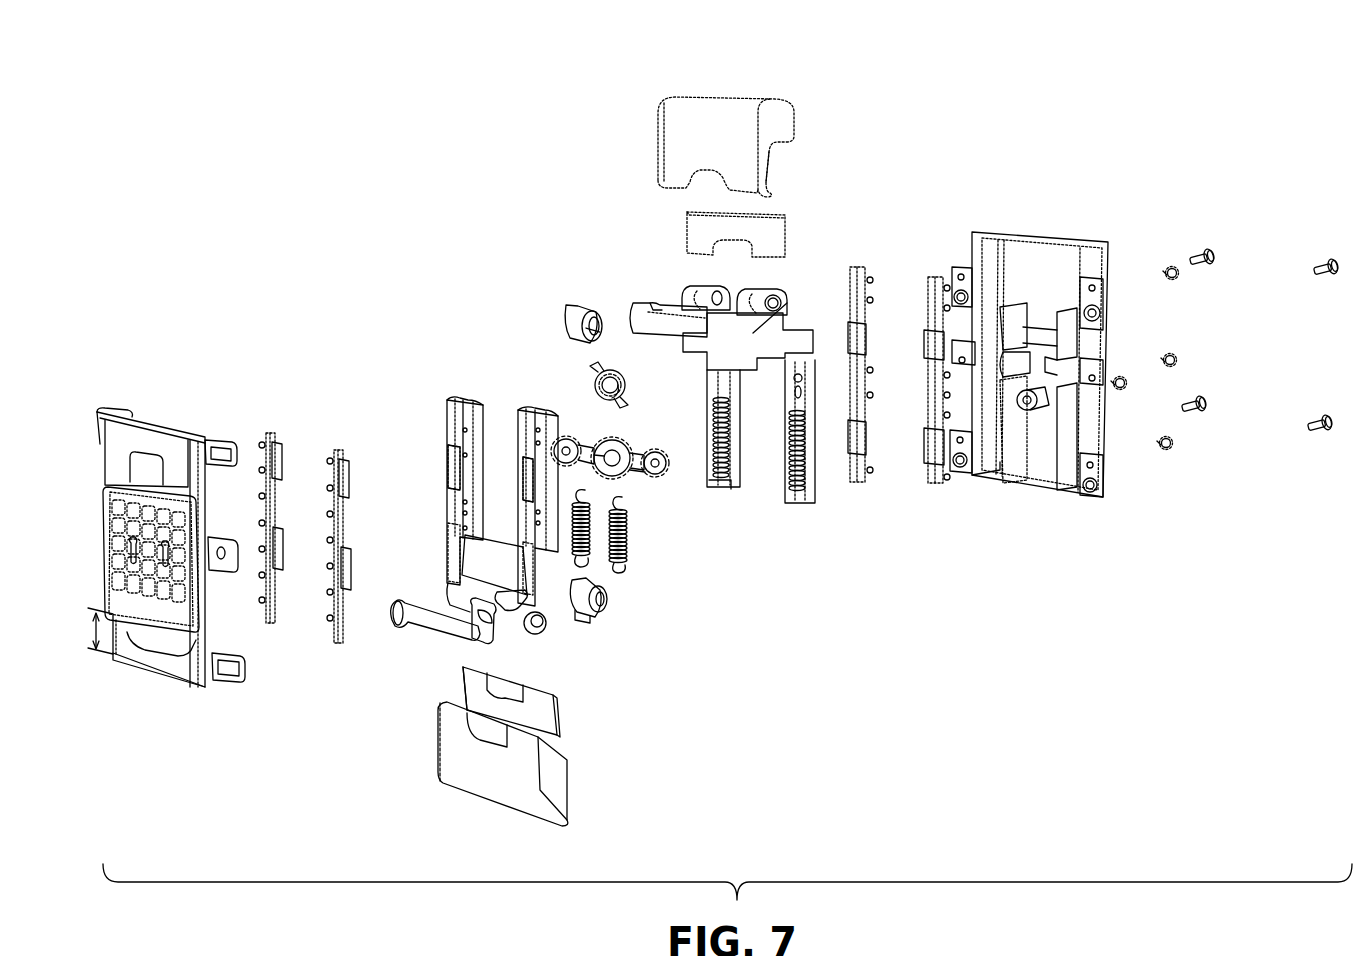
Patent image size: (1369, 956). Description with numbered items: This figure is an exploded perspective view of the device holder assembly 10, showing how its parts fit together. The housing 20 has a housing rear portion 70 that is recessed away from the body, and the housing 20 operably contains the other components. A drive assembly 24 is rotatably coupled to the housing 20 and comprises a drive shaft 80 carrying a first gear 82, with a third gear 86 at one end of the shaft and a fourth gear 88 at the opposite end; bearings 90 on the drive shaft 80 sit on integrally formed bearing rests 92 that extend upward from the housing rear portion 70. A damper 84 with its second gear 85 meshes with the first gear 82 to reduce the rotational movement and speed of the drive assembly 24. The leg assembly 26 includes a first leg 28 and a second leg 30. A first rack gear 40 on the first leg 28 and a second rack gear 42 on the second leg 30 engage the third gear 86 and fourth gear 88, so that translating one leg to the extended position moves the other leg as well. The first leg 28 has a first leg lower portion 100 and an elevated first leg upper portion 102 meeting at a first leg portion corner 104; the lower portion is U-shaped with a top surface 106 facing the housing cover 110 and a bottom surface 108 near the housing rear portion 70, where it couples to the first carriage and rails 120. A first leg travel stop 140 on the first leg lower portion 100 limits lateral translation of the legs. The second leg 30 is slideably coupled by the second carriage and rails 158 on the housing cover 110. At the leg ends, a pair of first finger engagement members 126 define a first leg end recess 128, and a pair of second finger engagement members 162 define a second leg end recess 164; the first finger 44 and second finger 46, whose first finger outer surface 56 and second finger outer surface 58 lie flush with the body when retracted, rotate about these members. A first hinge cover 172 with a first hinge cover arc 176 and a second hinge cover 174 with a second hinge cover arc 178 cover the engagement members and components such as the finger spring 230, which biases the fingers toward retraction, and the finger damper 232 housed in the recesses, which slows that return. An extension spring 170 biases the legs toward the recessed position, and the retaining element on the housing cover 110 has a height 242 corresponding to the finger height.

The device holder assembly 10 is at (365, 195).
The housing 20 is at (1040, 329).
The drive assembly 24 is at (678, 488).
The leg assembly 26 is at (770, 345).
The first leg 28 is at (812, 470).
The second leg 30 is at (450, 398).
The first rack gear 40 is at (723, 458).
The second rack gear 42 is at (428, 432).
The first finger 44 is at (663, 148).
The second finger 46 is at (503, 790).
The first finger outer surface 56 is at (712, 125).
The second finger outer surface 58 is at (460, 770).
The housing rear portion 70 is at (1035, 265).
The drive shaft 80 is at (650, 482).
The first gear 82 is at (657, 452).
The damper 84 is at (593, 378).
The second gear 85 is at (623, 393).
The third gear 86 is at (563, 437).
The fourth gear 88 is at (662, 475).
The bearing 90 is at (670, 480).
The bearing rests 92 is at (1033, 333).
The first leg lower portion 100 is at (795, 500).
The first leg upper portion 102 is at (755, 332).
The first leg portion corner 104 is at (790, 300).
The top surface 106 is at (805, 418).
The bottom surface 108 is at (820, 440).
The housing cover 110 is at (106, 480).
The first carriage and rails 120 is at (922, 430).
The first finger engagement member 126 is at (806, 260).
The first leg end recess 128 is at (700, 298).
The first leg travel stop 140 is at (800, 487).
The second carriage and rails 158 is at (271, 432).
The second finger engagement member 162 is at (540, 635).
The second leg end recess 164 is at (463, 680).
The extension spring 170 is at (620, 575).
The first hinge cover 172 is at (643, 308).
The second hinge cover 174 is at (470, 632).
The first hinge cover arc 176 is at (637, 318).
The second hinge cover arc 178 is at (393, 615).
The finger spring 230 is at (570, 312).
The finger damper 232 is at (585, 318).
The height 242 is at (93, 628).